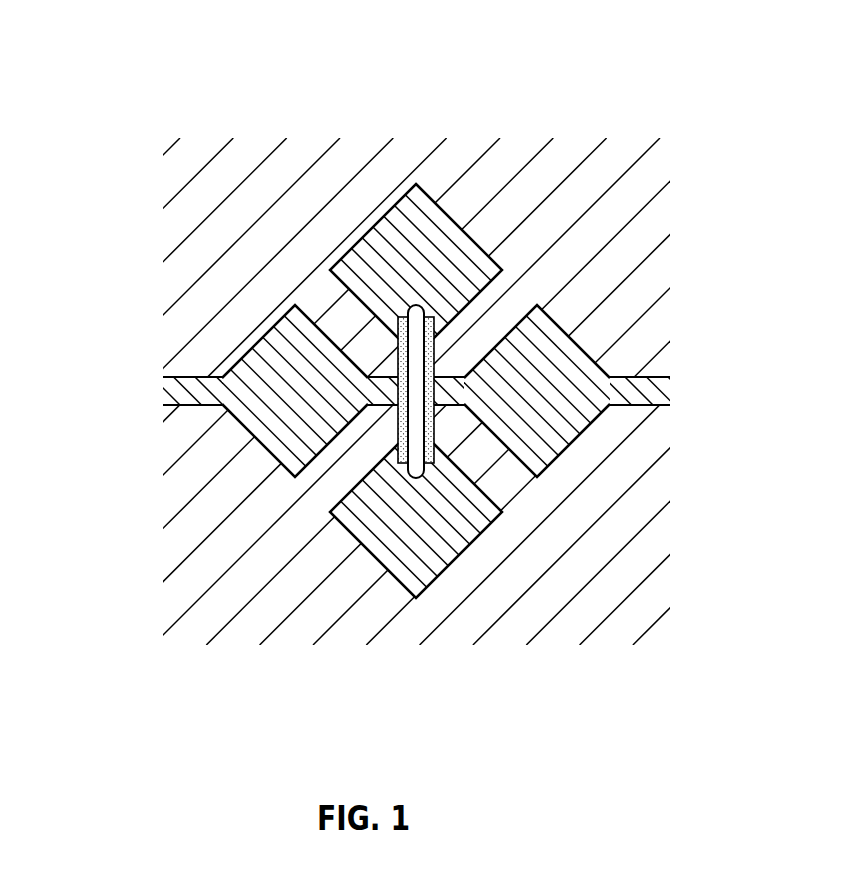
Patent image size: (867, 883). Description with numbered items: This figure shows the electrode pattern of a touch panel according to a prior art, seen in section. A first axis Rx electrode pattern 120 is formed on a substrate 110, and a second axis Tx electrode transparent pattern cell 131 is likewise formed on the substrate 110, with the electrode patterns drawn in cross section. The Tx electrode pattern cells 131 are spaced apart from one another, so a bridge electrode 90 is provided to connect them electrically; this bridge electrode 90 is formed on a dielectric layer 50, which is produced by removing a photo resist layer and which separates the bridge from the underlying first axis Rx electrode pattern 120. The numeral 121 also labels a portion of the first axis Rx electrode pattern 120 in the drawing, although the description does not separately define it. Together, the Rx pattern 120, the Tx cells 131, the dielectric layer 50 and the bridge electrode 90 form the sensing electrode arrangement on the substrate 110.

The substrate 110 is at (525, 188).
The first axis Rx electrode pattern 120 is at (250, 341).
The inclined surface of first electrode member 121 is at (257, 418).
The second axis Tx electrode pattern cell 131 is at (383, 237).
The bridge electrode 90 is at (415, 440).
The dielectric layer 50 is at (426, 412).